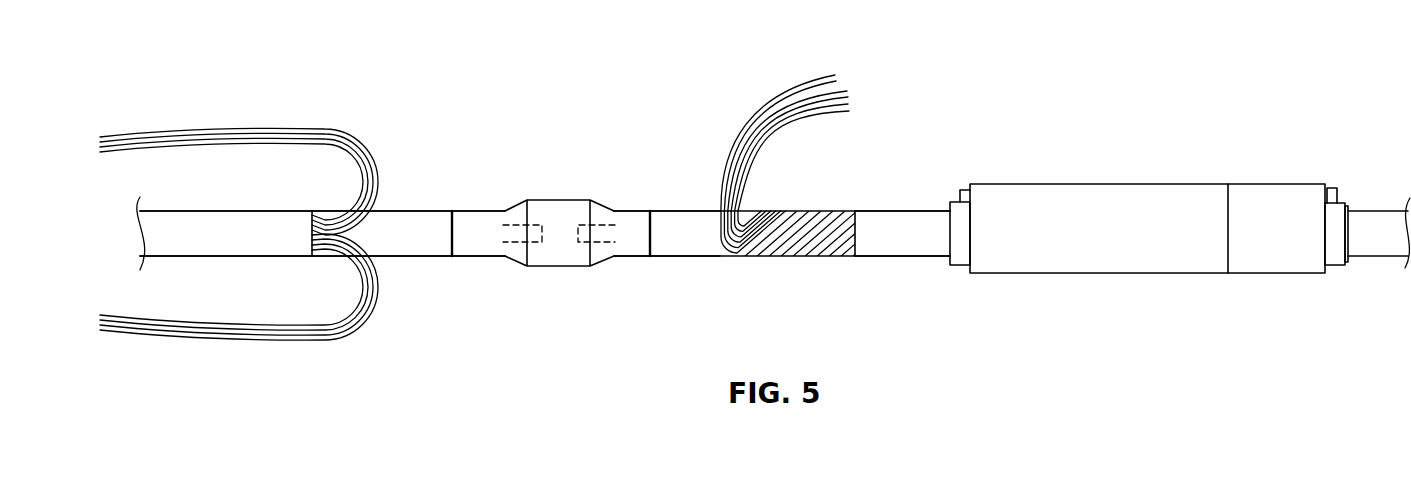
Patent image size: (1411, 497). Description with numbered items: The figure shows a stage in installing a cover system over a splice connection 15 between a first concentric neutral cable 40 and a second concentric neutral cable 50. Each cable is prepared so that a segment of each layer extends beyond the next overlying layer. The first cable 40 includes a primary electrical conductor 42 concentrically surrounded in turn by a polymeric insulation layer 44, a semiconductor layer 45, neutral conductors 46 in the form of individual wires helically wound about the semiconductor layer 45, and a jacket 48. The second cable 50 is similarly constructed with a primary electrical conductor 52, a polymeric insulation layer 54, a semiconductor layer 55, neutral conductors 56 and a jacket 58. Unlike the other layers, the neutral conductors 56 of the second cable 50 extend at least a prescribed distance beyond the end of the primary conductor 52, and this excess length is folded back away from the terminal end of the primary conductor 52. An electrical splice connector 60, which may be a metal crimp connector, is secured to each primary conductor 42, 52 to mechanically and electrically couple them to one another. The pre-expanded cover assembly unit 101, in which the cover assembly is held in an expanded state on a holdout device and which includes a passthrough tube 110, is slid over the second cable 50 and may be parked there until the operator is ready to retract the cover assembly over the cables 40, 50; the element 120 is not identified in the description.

The splice connection 15 is at (627, 192).
The first concentric neutral cable 40 is at (420, 192).
The primary electrical conductor 42 is at (537, 245).
The polymeric insulation layer 44 is at (472, 245).
The semiconductor layer 45 is at (412, 245).
The neutral conductors 46 is at (315, 366).
The jacket 48 is at (258, 222).
The second concentric neutral cable 50 is at (887, 187).
The primary electrical conductor 52 is at (600, 245).
The polymeric insulation layer 54 is at (637, 245).
The semiconductor layer 55 is at (687, 240).
The neutral conductors 56 is at (813, 102).
The jacket 58 is at (925, 240).
The splice connector 60 is at (557, 215).
The pre-expanded cover assembly unit 101 is at (1148, 168).
The passthrough tube 110 is at (1332, 188).
The strain relief 120 is at (1340, 207).